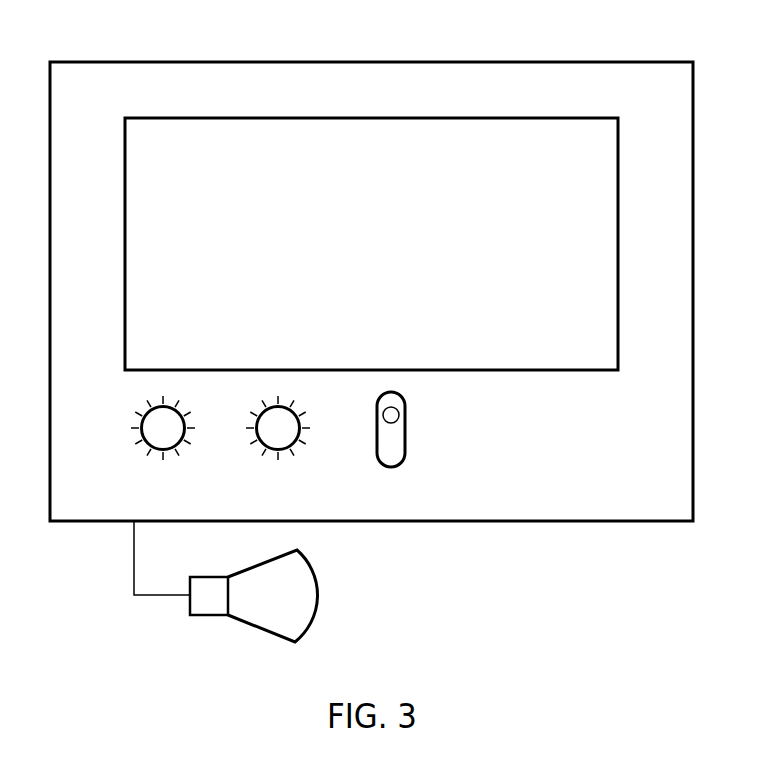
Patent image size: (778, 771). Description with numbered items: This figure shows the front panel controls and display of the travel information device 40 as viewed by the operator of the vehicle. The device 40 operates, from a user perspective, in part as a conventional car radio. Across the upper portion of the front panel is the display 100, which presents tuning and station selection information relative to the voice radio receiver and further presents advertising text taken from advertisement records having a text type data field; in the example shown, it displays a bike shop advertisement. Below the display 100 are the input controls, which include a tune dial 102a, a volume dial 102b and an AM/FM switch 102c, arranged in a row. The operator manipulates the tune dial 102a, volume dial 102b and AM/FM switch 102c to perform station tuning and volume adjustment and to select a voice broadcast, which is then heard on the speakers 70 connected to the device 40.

The device 40 is at (552, 530).
The display 100 is at (498, 112).
The tune dial 102a is at (163, 428).
The volume dial 102b is at (278, 430).
The AM/FM switch 102c is at (387, 453).
The speakers 70 is at (295, 602).